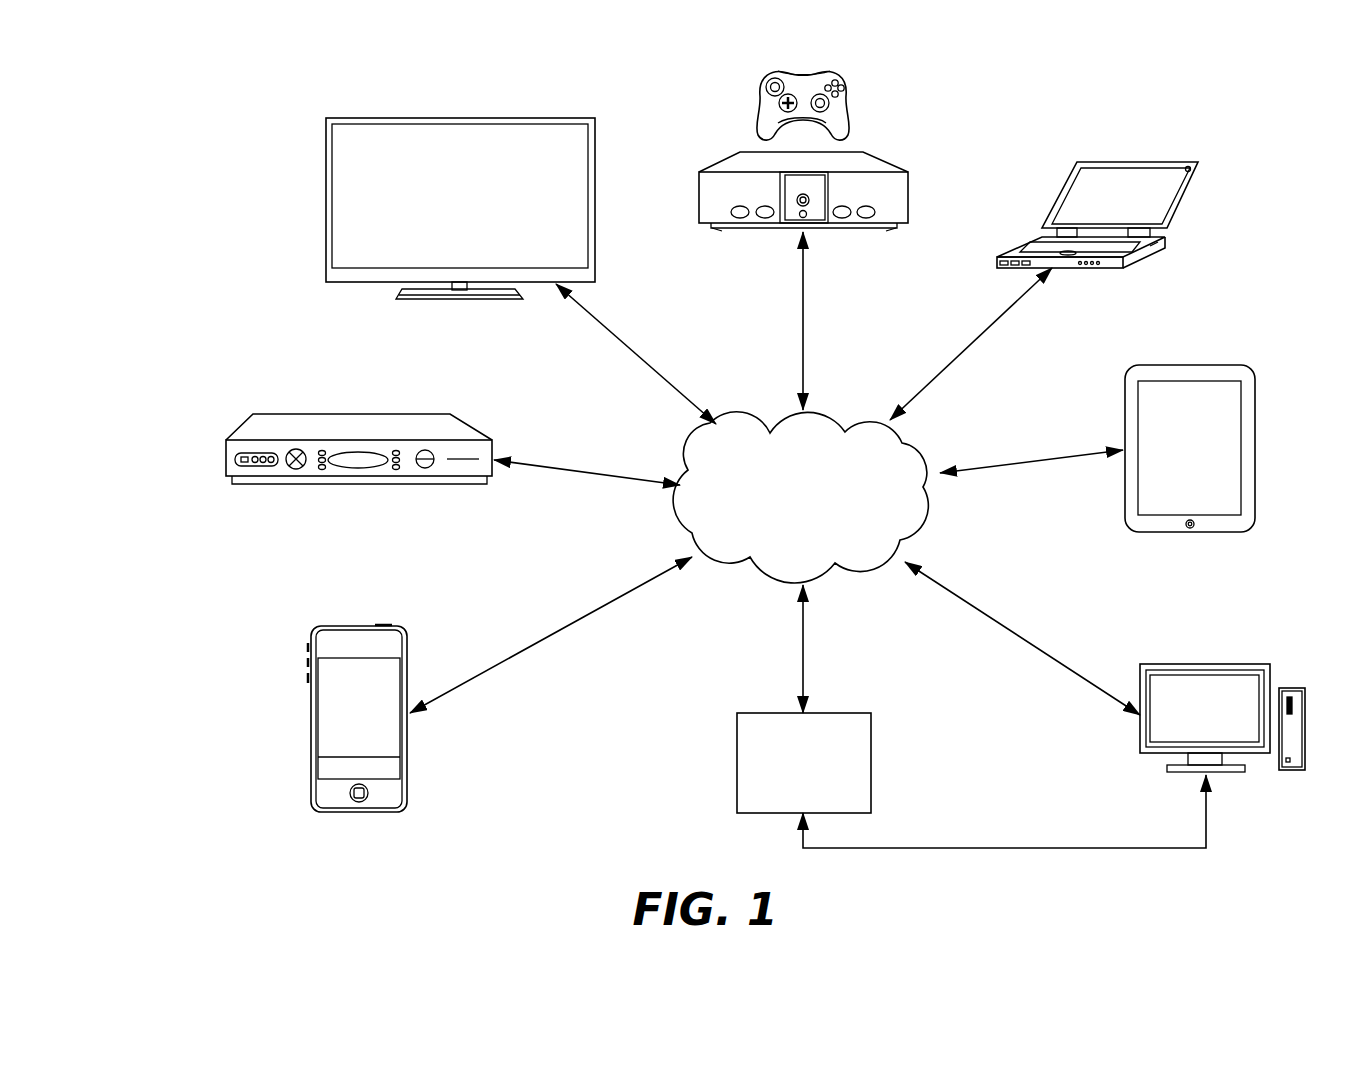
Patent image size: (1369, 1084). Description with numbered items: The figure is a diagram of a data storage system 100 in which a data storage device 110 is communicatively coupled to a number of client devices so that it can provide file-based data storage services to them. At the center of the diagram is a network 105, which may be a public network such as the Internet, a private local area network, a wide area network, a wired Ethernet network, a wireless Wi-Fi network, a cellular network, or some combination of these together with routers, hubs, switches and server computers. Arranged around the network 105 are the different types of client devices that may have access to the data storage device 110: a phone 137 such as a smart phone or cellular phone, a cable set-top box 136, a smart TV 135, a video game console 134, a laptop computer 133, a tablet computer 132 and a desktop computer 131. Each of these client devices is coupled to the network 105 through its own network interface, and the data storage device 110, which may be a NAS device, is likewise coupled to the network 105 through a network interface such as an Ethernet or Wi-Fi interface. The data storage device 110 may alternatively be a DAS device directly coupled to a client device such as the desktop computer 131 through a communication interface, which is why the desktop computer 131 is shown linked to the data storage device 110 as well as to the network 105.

The data storage system 100 is at (208, 136).
The network 105 is at (800, 497).
The data storage device 110 is at (871, 762).
The desktop computer 131 is at (1207, 664).
The tablet computer 132 is at (1188, 364).
The laptop computer 133 is at (1140, 158).
The video game console 134 is at (880, 158).
The smart TV 135 is at (459, 117).
The cable set-top box 136 is at (367, 413).
The phone 137 is at (360, 625).